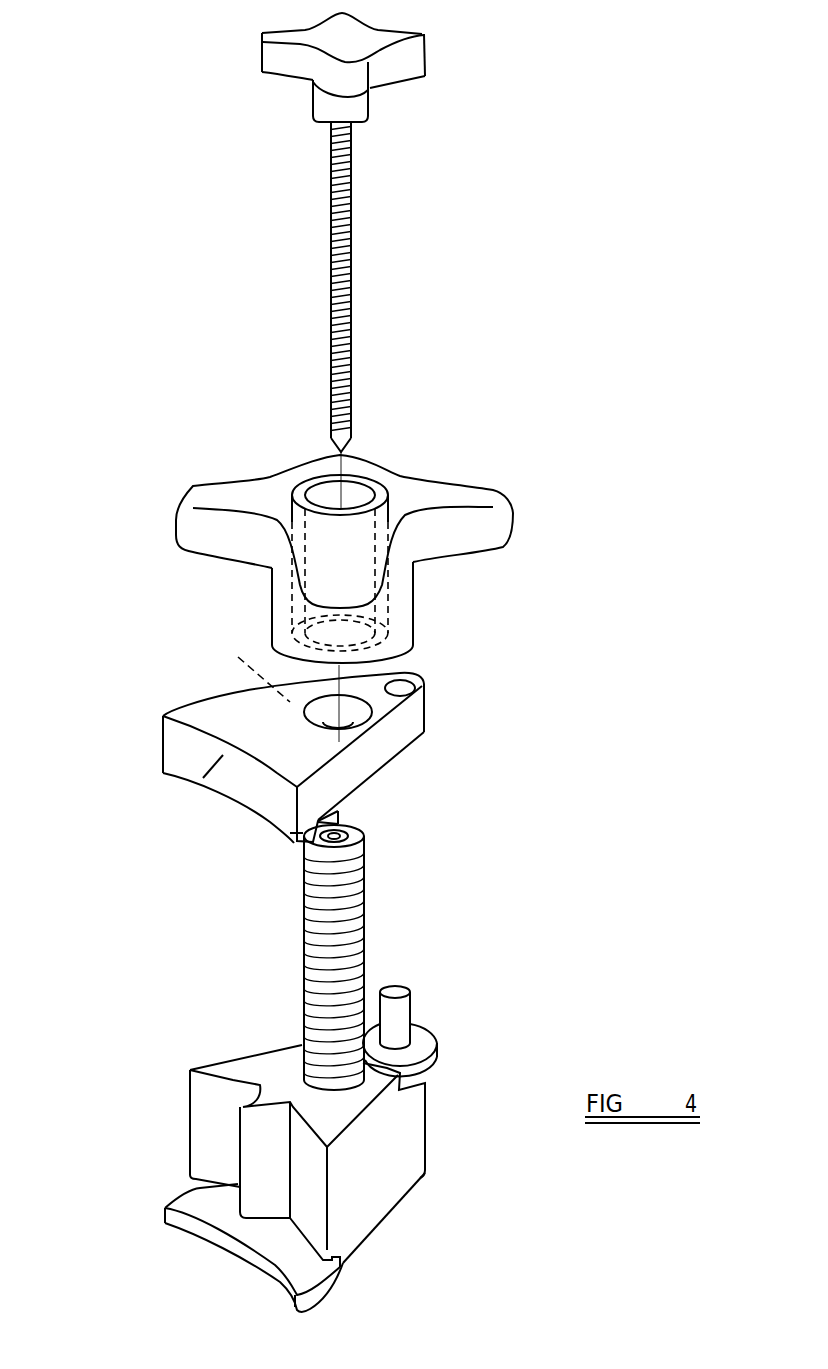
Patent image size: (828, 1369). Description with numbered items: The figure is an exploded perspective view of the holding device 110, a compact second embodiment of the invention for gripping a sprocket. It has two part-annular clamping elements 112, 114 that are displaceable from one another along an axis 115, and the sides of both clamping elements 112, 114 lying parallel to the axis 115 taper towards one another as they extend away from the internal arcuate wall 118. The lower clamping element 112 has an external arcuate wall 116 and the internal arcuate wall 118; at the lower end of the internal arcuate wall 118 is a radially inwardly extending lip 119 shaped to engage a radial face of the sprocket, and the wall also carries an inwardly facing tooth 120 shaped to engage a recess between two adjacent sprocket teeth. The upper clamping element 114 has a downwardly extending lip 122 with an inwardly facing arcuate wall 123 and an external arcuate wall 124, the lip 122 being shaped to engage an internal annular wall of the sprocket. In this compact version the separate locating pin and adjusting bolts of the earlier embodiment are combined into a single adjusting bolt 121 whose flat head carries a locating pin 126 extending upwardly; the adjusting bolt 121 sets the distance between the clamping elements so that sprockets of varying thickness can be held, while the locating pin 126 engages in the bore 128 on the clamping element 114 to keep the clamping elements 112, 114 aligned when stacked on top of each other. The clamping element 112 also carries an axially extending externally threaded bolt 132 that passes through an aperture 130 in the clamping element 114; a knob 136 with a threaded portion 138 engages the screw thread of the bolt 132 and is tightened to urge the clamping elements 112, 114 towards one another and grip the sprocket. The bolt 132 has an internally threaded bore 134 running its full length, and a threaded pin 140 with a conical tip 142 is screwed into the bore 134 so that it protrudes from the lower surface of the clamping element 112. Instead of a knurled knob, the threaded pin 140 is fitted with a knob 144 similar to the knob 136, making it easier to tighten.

The holding device 110 is at (438, 1148).
The clamping element 112 is at (395, 1213).
The clamping element 114 is at (386, 752).
The axis 115 is at (238, 657).
The external arcuate wall 116 is at (427, 1115).
The internal arcuate wall 118 is at (212, 1122).
The lip 119 is at (243, 1258).
The tooth 120 is at (262, 1157).
The adjusting bolt 121 is at (427, 1037).
The lip 122 is at (293, 843).
The inwardly facing arcuate wall 123 is at (203, 778).
The external arcuate wall 124 is at (337, 822).
The locating pin 126 is at (398, 994).
The bore 128 is at (420, 678).
The aperture 130 is at (310, 705).
The threaded bolt 132 is at (320, 913).
The internally threaded bore 134 is at (333, 838).
The knob 136 is at (487, 482).
The threaded portion 138 is at (308, 484).
The threaded pin 140 is at (352, 242).
The conical tip 142 is at (347, 452).
The knob 144 is at (424, 36).